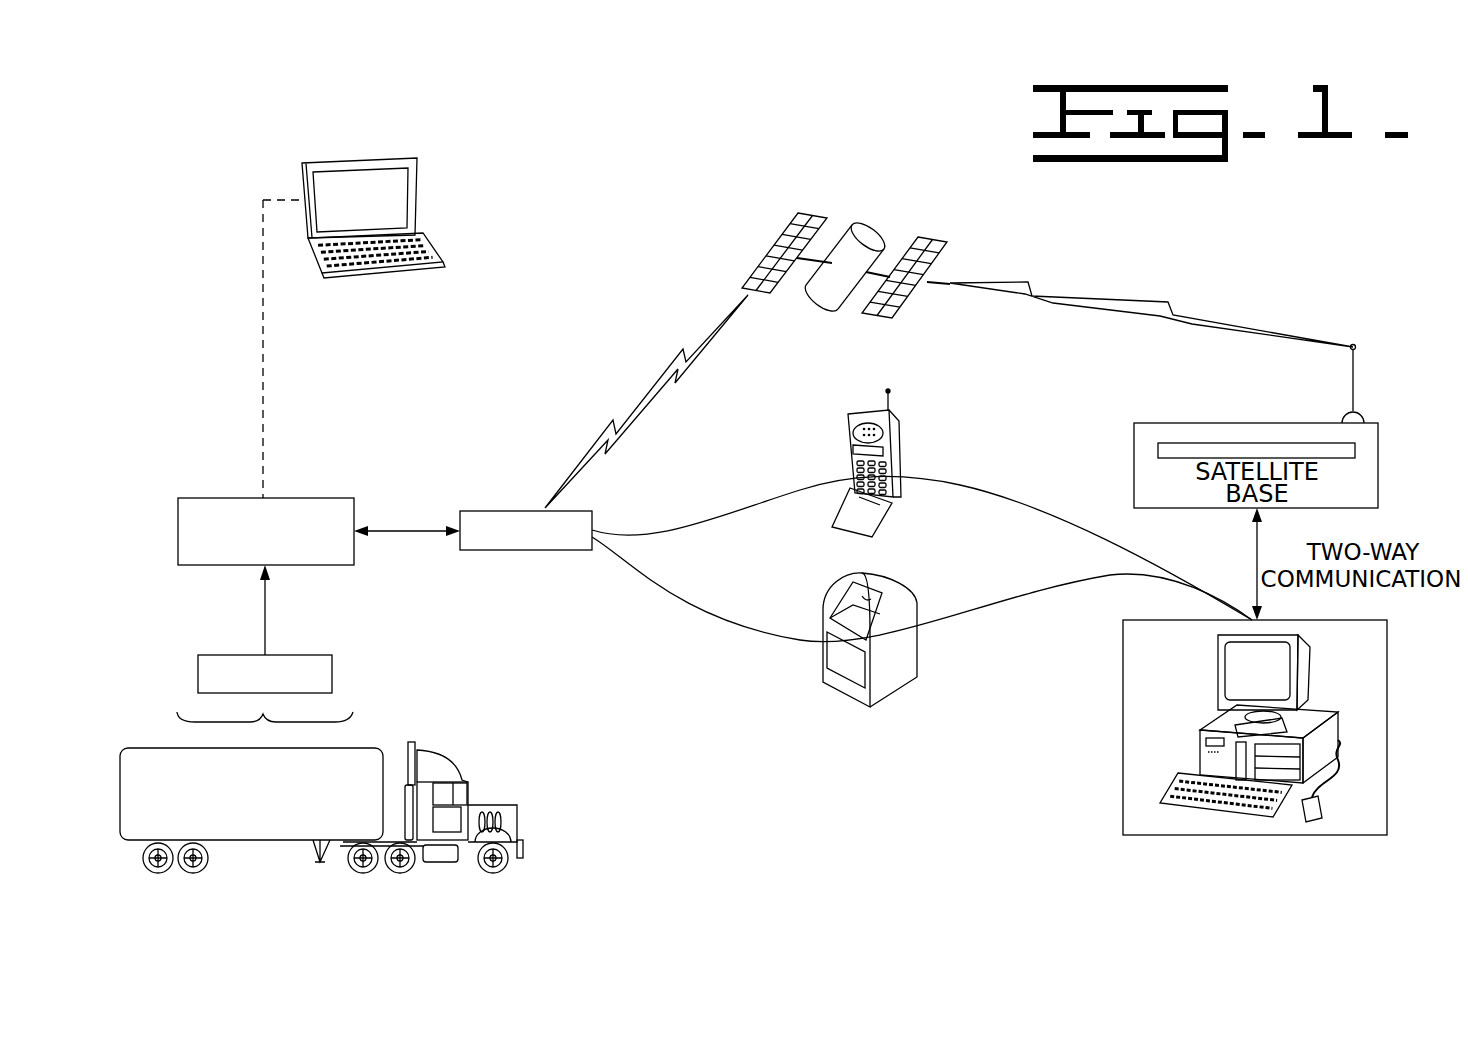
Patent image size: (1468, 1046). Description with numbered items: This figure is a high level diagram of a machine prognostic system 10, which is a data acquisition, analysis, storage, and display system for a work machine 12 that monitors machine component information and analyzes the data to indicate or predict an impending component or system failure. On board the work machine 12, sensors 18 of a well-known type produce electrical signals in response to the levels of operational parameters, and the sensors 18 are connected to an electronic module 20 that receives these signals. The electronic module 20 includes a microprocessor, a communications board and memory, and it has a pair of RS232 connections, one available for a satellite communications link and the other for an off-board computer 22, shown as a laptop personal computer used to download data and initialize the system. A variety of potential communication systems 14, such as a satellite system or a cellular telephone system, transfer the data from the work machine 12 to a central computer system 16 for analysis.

The machine prognostic system 10 is at (562, 618).
The work machine 12 is at (608, 826).
The communication systems 14 is at (479, 453).
The central computer system 16 is at (1122, 713).
The sensors 18 is at (388, 663).
The electronic module 20 is at (310, 498).
The off-board computer 22 is at (420, 197).